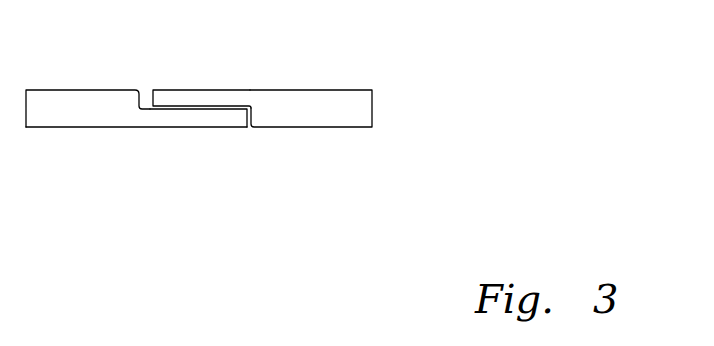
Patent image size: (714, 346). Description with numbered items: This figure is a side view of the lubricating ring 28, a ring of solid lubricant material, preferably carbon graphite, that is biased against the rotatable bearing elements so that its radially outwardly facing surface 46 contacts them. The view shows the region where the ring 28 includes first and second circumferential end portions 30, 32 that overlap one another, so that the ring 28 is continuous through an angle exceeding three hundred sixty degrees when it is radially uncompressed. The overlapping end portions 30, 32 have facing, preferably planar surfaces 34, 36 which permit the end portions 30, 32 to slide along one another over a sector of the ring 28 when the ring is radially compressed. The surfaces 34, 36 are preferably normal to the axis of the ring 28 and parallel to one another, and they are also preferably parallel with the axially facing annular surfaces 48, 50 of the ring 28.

The ring 28 is at (350, 84).
The first circumferential end portion 30 is at (202, 97).
The second circumferential end portion 32 is at (202, 117).
The planar surface 34 is at (246, 107).
The planar surface 36 is at (155, 110).
The radially outwardly facing surface 46 is at (363, 108).
The axially facing annular surface 48 is at (52, 90).
The axially facing annular surface 50 is at (62, 127).